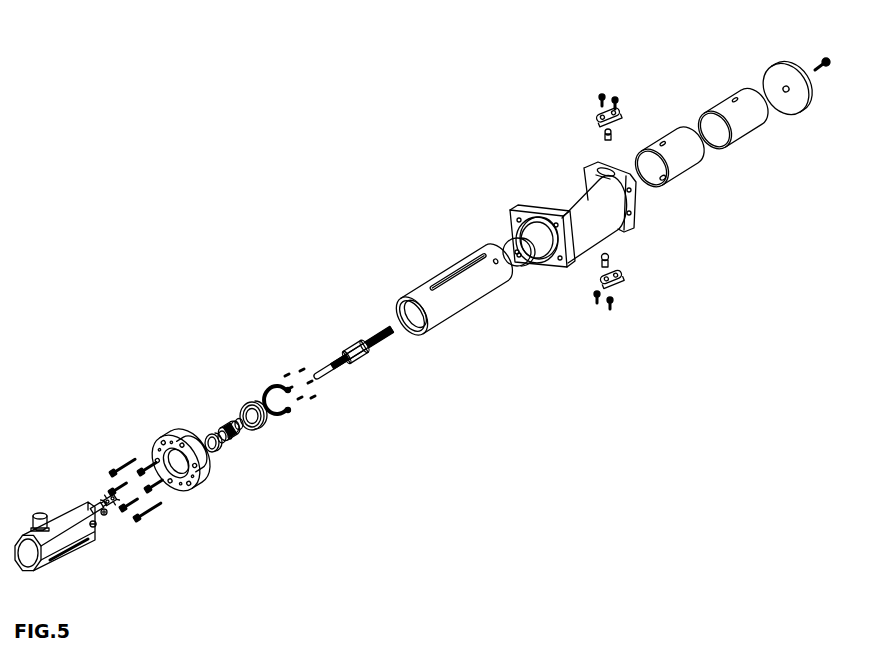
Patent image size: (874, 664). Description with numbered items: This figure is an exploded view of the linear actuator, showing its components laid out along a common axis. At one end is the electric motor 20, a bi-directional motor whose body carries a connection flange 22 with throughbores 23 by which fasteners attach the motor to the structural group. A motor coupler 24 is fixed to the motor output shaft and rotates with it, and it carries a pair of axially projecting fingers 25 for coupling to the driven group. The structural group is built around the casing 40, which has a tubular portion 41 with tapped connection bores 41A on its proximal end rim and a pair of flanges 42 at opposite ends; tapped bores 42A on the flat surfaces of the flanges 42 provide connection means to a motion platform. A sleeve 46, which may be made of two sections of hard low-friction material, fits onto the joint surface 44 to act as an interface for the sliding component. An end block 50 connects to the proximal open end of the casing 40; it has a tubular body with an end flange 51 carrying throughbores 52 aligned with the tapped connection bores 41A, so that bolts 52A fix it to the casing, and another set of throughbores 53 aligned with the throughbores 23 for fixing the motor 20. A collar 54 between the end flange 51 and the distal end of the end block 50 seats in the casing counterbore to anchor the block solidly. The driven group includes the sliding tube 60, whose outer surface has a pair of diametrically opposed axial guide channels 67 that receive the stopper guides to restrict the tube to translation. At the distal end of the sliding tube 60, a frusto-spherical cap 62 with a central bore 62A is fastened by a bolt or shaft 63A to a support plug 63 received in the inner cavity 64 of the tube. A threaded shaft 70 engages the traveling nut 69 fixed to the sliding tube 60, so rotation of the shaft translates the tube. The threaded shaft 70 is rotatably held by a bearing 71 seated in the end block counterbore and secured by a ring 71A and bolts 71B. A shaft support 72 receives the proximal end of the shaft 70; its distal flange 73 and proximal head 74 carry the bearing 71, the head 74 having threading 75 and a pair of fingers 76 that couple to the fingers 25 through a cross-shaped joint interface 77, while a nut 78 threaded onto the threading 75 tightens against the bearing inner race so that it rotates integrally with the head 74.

The electric motor 20 is at (71, 558).
The connection flange 22 is at (72, 503).
The throughbores 23 is at (95, 527).
The motor coupler 24 is at (94, 505).
The fingers 25 is at (106, 514).
The casing 40 is at (637, 168).
The tubular portion 41 is at (604, 236).
The tapped connection bores 41A is at (516, 236).
The flanges 42 is at (522, 212).
The tapped bores 42A is at (558, 271).
The joint surface 44 is at (695, 180).
The sleeve 46 is at (745, 133).
The end block 50 is at (177, 454).
The end flange 51 is at (190, 454).
The throughbores 52 is at (175, 462).
The throughbores 53 is at (187, 425).
The collar 54 is at (176, 462).
The bolts 52A is at (112, 466).
The sliding tube 60 is at (445, 289).
The frusto-spherical cap 62 is at (777, 91).
The bore 62A is at (786, 89).
The support plug 63 is at (522, 270).
The bolt or shaft 63A is at (823, 57).
The inner cavity 64 is at (414, 315).
The guide channels 67 is at (429, 276).
The traveling nut 69 is at (353, 348).
The threaded shaft 70 is at (352, 345).
The bearing 71 is at (263, 421).
The ring 71A is at (267, 390).
The bolts 71B is at (313, 400).
The shaft support 72 is at (244, 433).
The distal flange 73 is at (235, 423).
The proximal head 74 is at (229, 427).
The threading 75 is at (232, 439).
The fingers 76 is at (221, 431).
The joint interface 77 is at (108, 496).
The nut 78 is at (217, 450).